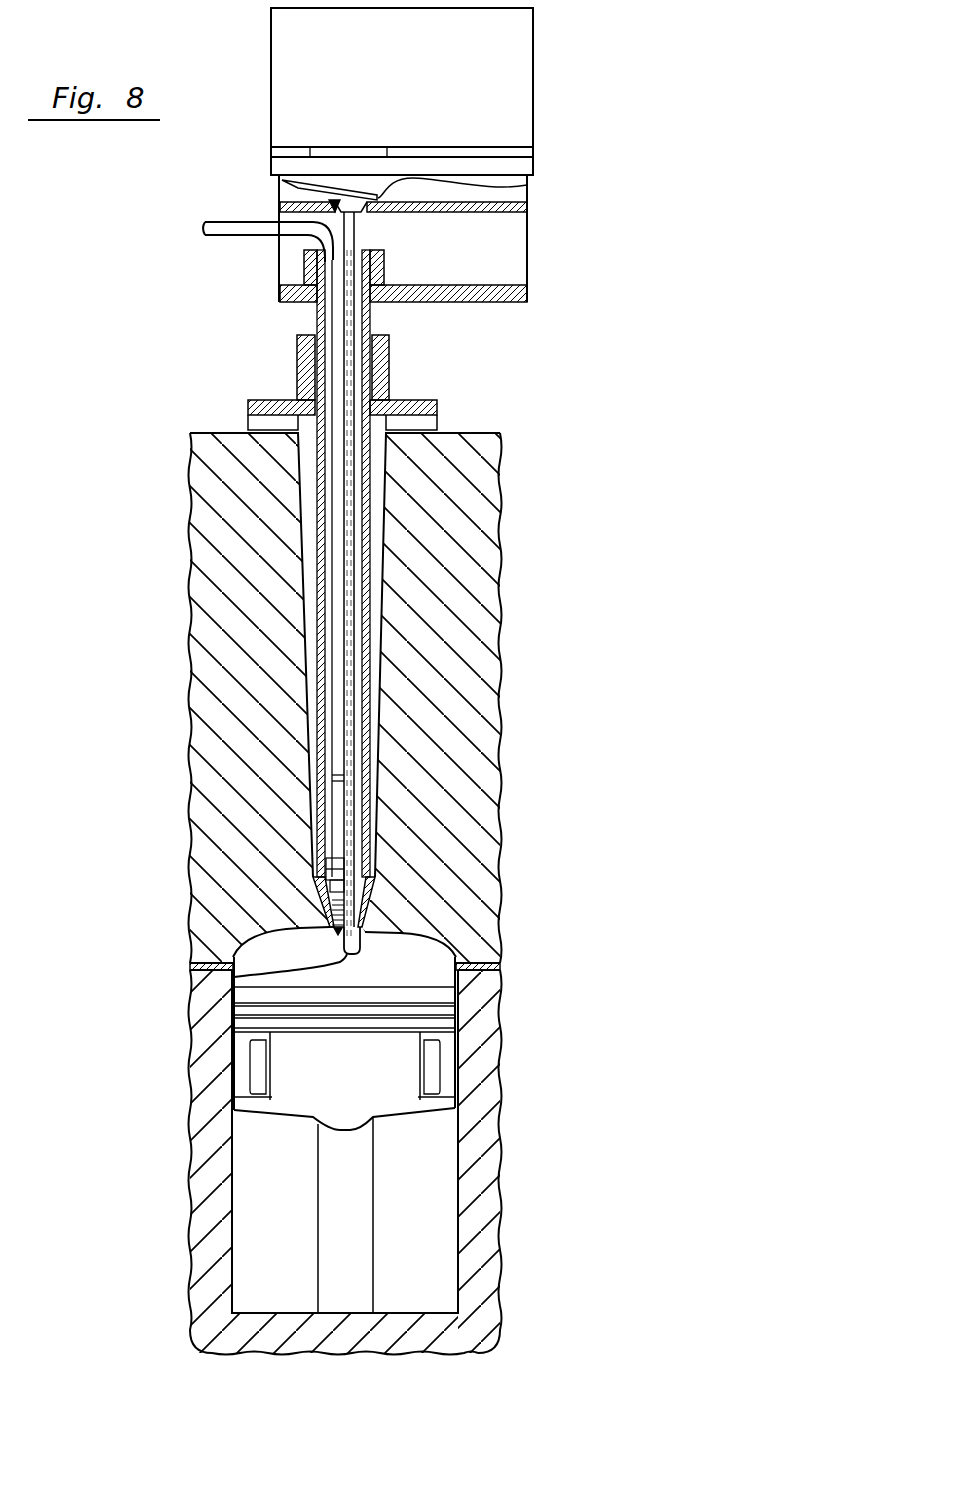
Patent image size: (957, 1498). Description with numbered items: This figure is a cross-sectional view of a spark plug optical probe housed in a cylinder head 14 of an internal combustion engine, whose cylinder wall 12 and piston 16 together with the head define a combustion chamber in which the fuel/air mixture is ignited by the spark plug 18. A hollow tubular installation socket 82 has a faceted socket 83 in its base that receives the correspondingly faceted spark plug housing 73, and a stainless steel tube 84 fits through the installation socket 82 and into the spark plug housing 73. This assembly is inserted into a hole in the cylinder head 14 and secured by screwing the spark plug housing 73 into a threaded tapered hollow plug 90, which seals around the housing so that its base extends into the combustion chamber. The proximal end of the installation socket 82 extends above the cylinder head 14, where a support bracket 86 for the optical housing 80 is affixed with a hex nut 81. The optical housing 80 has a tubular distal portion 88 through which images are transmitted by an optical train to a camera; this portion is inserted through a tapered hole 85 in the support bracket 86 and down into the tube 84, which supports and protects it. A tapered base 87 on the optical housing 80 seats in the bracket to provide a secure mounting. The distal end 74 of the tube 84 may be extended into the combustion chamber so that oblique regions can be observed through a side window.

The cylinder wall 12 is at (482, 1130).
The cylinder head 14 is at (440, 658).
The piston 16 is at (323, 1072).
The spark plug 18 is at (240, 931).
The spark plug housing 73 is at (330, 870).
The distal end 74 is at (234, 977).
The optical housing 80 is at (370, 174).
The hex nut 81 is at (308, 268).
The installation socket 82 is at (372, 453).
The faceted socket 83 is at (380, 876).
The tube 84 is at (360, 528).
The tapered hole 85 is at (332, 215).
The support bracket 86 is at (487, 213).
The tapered base 87 is at (350, 207).
The tubular distal portion 88 is at (355, 229).
The tapered hollow plug 90 is at (377, 898).